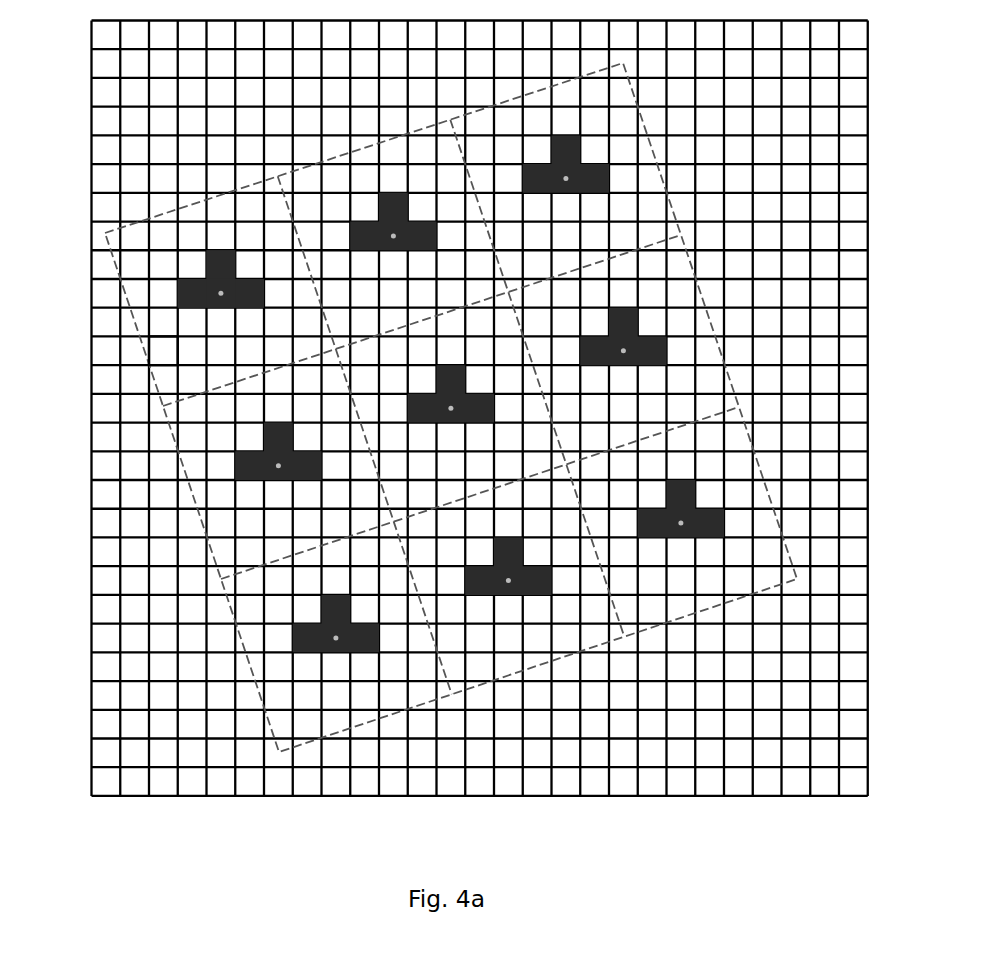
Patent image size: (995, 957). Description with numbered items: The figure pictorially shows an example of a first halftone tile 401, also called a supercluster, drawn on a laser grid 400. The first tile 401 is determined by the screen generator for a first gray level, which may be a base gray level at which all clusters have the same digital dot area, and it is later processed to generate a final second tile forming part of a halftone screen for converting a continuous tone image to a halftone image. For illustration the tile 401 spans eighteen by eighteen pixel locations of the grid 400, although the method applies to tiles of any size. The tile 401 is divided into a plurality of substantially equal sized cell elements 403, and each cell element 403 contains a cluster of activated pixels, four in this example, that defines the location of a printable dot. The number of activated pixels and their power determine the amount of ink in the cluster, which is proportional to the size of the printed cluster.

The laser grid 400 is at (104, 797).
The first tile 401 is at (220, 603).
The cell element 403 is at (165, 348).